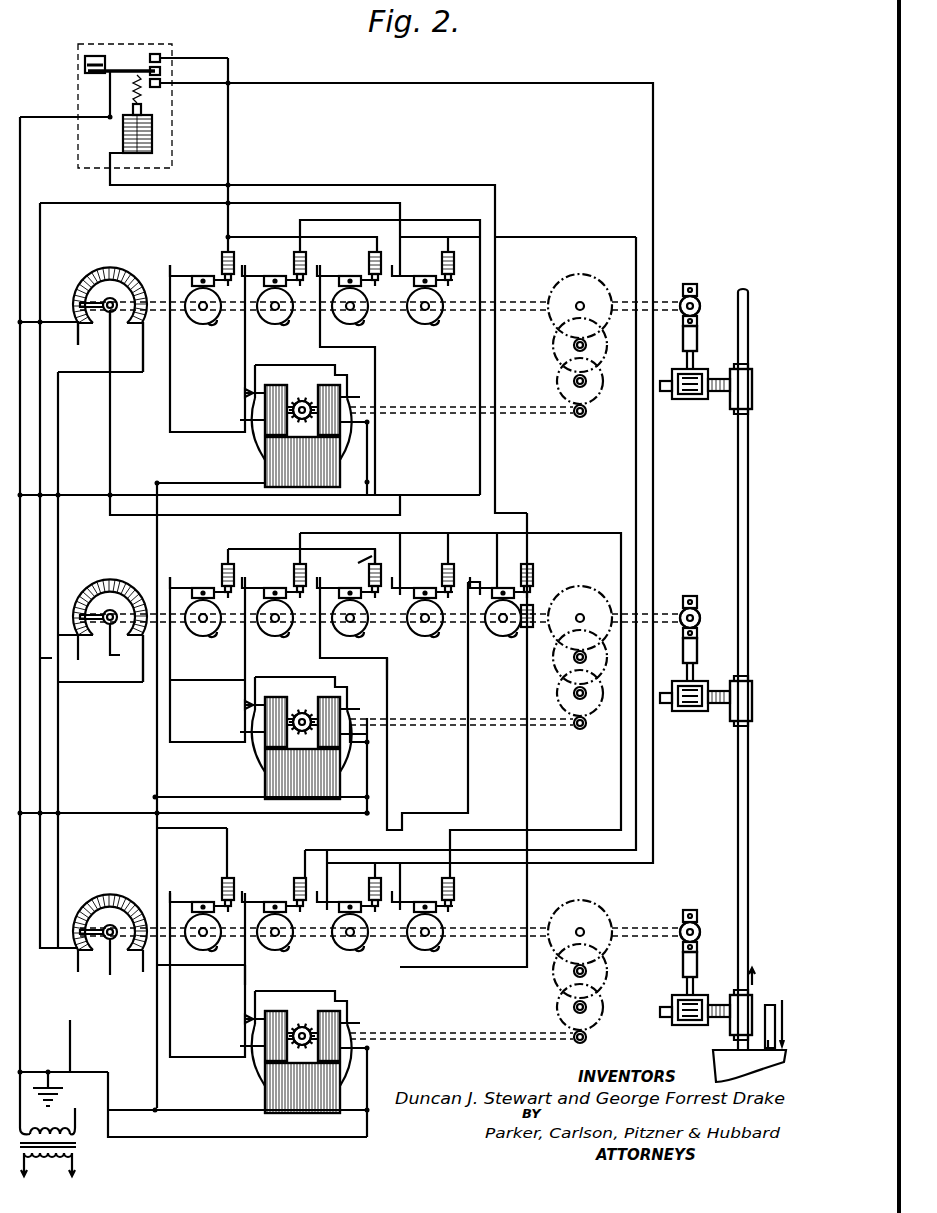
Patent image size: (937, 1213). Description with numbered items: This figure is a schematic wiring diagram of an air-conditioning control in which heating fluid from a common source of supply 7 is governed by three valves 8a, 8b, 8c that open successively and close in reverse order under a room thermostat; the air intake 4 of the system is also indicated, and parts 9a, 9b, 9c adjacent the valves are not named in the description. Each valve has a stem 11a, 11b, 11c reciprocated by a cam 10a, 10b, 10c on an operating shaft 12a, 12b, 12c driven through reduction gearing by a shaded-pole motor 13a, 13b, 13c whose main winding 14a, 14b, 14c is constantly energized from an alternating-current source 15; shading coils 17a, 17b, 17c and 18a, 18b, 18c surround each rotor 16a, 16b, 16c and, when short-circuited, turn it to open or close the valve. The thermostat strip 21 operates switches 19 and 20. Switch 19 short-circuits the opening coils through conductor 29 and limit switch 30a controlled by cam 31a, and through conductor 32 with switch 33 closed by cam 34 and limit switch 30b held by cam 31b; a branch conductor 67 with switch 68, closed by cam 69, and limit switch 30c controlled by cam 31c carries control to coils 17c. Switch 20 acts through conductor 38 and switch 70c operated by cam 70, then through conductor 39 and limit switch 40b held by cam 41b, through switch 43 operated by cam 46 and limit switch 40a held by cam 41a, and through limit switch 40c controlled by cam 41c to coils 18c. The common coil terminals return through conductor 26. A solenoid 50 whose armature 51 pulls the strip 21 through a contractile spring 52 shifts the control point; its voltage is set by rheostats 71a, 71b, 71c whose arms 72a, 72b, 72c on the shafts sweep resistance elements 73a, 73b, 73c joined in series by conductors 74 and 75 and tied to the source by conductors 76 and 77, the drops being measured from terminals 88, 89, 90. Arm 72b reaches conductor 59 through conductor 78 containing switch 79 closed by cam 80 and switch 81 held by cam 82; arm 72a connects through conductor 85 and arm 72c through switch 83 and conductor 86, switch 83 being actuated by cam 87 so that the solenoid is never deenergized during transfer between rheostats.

The intake 4 is at (540, 584).
The common source of supply 7 is at (722, 1068).
The valve 8a is at (678, 364).
The valve 8b is at (678, 678).
The valve 8c is at (674, 987).
The pipe fitting 9a is at (714, 372).
The pipe fitting 9b is at (714, 684).
The pipe fitting 9c is at (714, 1002).
The cam 10a is at (698, 300).
The cam 10b is at (698, 612).
The cam 10c is at (698, 928).
The valve stem 11a is at (693, 337).
The valve stem 11b is at (693, 650).
The valve stem 11c is at (693, 968).
The operating shaft 12a is at (548, 304).
The operating shaft 12b is at (668, 614).
The operating shaft 12c is at (640, 928).
The electric motor 13a is at (246, 459).
The electric motor 13b is at (246, 771).
The electric motor 13c is at (246, 1087).
The main winding 14a is at (345, 480).
The main winding 14b is at (345, 792).
The main winding 14c is at (310, 1113).
The source of alternating current 15 is at (80, 1140).
The rotor 16a is at (302, 398).
The rotor 16b is at (305, 710).
The rotor 16c is at (303, 1022).
The shading coils 17a is at (360, 397).
The shading coils 17b is at (340, 709).
The shading coils 17c is at (340, 1024).
The shading coils 18a is at (245, 392).
The shading coils 18b is at (245, 704).
The shading coils 18c is at (245, 1019).
The switch 19 is at (165, 60).
The switch 20 is at (165, 74).
The strip of thermostatic metal 21 is at (122, 68).
The conductor 26 is at (20, 160).
The conductor 29 is at (228, 150).
The limit switch 30a is at (220, 268).
The limit switch 30b is at (220, 580).
The limit switch 30c is at (220, 902).
The cam 31a is at (210, 322).
The cam 31b is at (210, 634).
The cam 31c is at (210, 948).
The conductor 32 is at (268, 238).
The switch 33 is at (366, 280).
The cam 34 is at (357, 322).
The conductor 38 is at (340, 83).
The conductor 39 is at (245, 986).
The limit switch 40a is at (292, 276).
The limit switch 40b is at (292, 588).
The limit switch 40c is at (292, 906).
The cam 41a is at (283, 322).
The cam 41b is at (283, 634).
The cam 41c is at (283, 948).
The switch 43 is at (442, 588).
The cam 46 is at (433, 636).
The solenoid 50 is at (152, 134).
The armature 51 is at (142, 112).
The contractile spring 52 is at (140, 95).
The conductor 59 is at (350, 168).
The conductor 67 is at (372, 556).
The switch 68 is at (366, 592).
The cam 69 is at (358, 634).
The cam 70 is at (358, 948).
The switch 70c is at (366, 906).
The rheostat 71a is at (92, 267).
The rheostat 71b is at (92, 579).
The rheostat 71c is at (92, 893).
The movable contact arm 72a is at (100, 315).
The movable contact arm 72b is at (128, 643).
The movable contact arm 72c is at (99, 969).
The resistance element 73a is at (133, 272).
The resistance element 73b is at (133, 585).
The resistance element 73c is at (133, 898).
The conductor 74 is at (58, 448).
The conductor 75 is at (58, 746).
The conductor 76 is at (48, 326).
The conductor 77 is at (155, 1088).
The conductor 78 is at (468, 768).
The switch 79 is at (440, 280).
The cam 80 is at (433, 322).
The switch 81 is at (442, 906).
The cam 82 is at (433, 948).
The switch 83 is at (530, 602).
The conductor 85 is at (110, 448).
The conductor 86 is at (527, 778).
The cam 87 is at (505, 638).
The terminal 88 is at (81, 346).
The terminal 89 is at (80, 655).
The terminal 90 is at (78, 962).